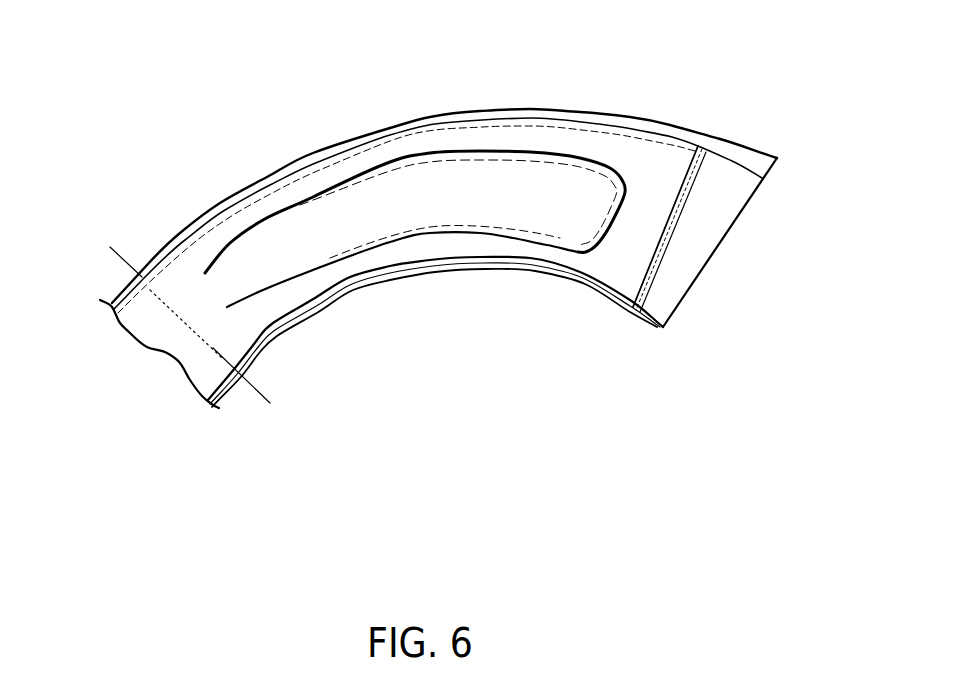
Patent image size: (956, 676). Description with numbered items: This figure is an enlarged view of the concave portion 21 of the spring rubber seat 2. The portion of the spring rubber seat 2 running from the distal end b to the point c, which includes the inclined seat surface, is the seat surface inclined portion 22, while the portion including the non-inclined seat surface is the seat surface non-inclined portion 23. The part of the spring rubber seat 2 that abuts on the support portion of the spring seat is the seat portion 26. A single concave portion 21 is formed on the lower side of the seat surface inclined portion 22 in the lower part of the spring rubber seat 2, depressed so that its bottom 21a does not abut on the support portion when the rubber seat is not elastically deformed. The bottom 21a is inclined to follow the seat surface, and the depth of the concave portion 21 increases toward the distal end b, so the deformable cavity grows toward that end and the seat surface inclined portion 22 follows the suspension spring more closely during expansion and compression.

The spring rubber seat 2 is at (415, 245).
The concave portion 21 is at (415, 189).
The bottom 21a is at (450, 225).
The seat surface inclined portion 22 is at (408, 118).
The seat surface non-inclined portion 23 is at (230, 385).
The seat portion 26 is at (143, 327).
The distal end b is at (717, 257).
The boundary point of seat surface inclined portion c is at (116, 245).